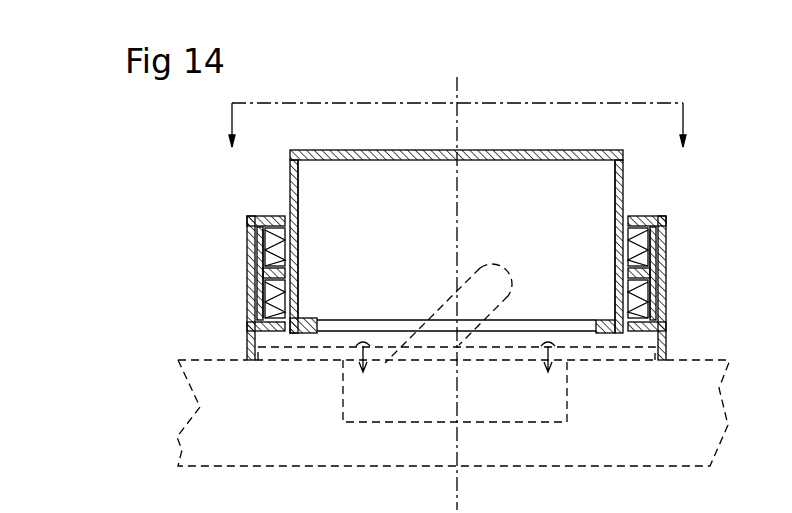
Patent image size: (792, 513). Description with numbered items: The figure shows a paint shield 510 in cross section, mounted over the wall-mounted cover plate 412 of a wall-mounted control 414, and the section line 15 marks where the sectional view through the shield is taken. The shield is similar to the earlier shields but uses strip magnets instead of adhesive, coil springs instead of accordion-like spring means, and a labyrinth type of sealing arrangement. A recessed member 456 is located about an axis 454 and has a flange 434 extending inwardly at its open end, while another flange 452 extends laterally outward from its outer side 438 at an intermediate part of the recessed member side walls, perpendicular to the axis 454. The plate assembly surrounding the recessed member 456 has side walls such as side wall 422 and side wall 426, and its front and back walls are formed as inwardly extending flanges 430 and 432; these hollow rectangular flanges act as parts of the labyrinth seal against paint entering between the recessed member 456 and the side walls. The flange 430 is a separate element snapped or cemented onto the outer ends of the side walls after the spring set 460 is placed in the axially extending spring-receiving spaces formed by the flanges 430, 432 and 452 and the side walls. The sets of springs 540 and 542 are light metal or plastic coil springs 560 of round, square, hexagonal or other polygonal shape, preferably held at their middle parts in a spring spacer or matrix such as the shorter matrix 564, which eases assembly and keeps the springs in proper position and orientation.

The section line 15- 15 is at (458, 125).
The wall-mounted cover plate 412 is at (285, 352).
The wall-mounted control 414 is at (498, 408).
The side wall 422 is at (257, 263).
The side wall 426 is at (660, 232).
The inwardly extending flange 430 is at (443, 250).
The inwardly extending flange 432 is at (250, 325).
The flange 434 is at (598, 322).
The outer side 438 is at (628, 232).
The flange 452 is at (262, 272).
The axis 454 is at (462, 92).
The recessed member 456 is at (540, 150).
The spring set 460 is at (456, 240).
The paint shield 510 is at (480, 189).
The set of springs 540 is at (258, 252).
The set of springs 542 is at (257, 295).
The spring 560 is at (265, 248).
The shorter matrix 564 is at (257, 244).